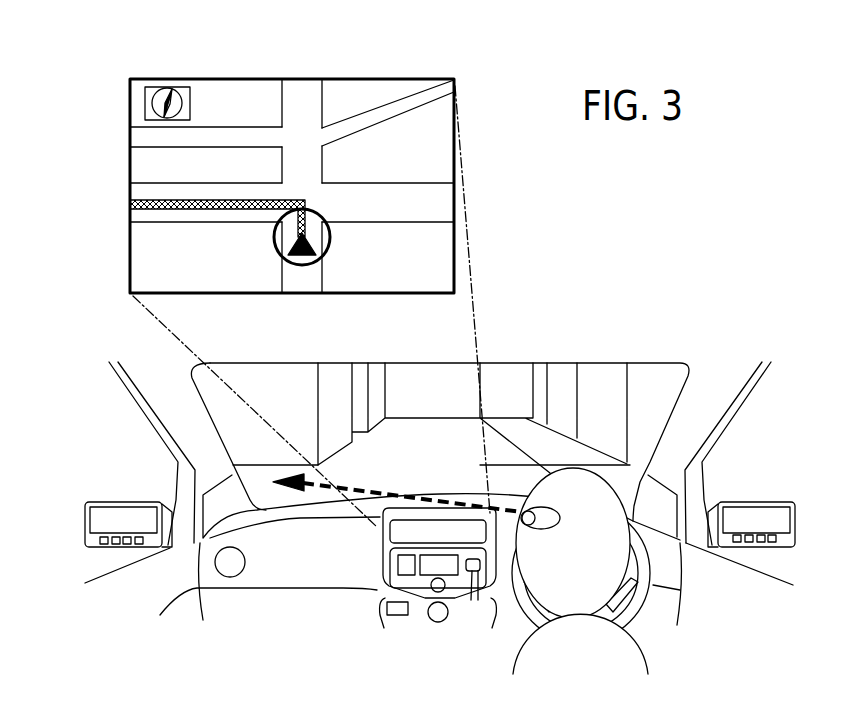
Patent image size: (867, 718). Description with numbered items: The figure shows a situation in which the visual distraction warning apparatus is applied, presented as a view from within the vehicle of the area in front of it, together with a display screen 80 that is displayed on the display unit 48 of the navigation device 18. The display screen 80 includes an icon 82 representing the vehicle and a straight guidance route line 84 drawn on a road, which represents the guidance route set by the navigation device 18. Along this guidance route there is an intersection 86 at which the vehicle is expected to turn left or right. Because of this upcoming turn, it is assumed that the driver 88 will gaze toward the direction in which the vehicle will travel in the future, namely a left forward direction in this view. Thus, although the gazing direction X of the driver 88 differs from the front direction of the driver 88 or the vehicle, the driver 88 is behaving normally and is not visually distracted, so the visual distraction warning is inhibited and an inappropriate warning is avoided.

The navigation device 18 is at (395, 538).
The display unit 48 is at (378, 77).
The display screen 80 is at (233, 79).
The icon 82 is at (330, 237).
The guidance route line 84 is at (150, 200).
The intersection 86 is at (305, 200).
The driver 88 is at (580, 583).
The gazing direction X is at (313, 487).